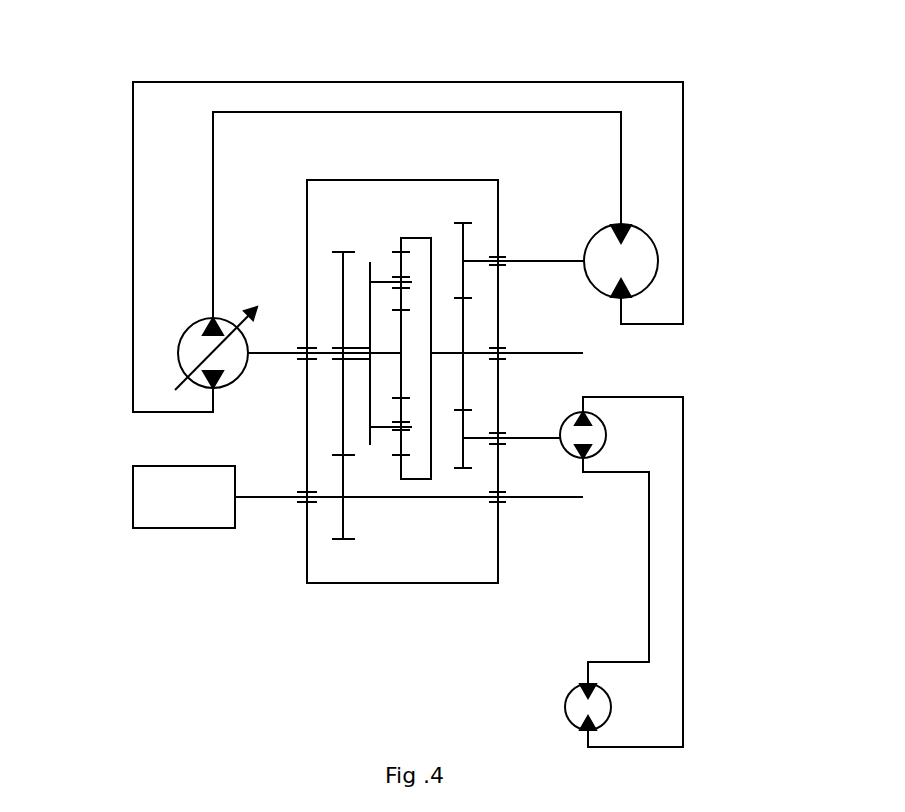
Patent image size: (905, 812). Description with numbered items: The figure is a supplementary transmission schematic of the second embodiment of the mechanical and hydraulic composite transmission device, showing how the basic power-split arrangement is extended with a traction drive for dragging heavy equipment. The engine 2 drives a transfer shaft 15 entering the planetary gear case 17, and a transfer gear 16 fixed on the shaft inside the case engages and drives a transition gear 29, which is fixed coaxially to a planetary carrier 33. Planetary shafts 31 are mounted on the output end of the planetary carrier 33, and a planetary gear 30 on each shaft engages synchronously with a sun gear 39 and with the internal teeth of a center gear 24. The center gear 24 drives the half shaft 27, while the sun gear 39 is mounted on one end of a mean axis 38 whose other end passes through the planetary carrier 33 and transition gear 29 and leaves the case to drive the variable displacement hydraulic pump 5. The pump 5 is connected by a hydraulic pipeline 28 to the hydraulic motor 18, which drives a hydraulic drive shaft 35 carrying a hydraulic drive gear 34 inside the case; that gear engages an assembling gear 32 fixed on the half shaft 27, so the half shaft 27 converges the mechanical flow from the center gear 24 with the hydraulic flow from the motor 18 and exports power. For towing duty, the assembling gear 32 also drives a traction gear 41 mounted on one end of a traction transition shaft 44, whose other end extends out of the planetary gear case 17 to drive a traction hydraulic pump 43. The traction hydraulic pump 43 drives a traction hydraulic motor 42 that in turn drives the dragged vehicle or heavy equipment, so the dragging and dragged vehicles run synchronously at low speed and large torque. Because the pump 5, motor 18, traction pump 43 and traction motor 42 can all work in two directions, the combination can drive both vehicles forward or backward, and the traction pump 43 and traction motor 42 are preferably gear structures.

The engine 2 is at (155, 517).
The variable displacement hydraulic pump 5 is at (192, 340).
The transfer shaft 15 is at (270, 495).
The transfer gear 16 is at (340, 508).
The planetary gear case 17 is at (463, 556).
The hydraulic motor 18 is at (633, 262).
The center gear 24 is at (416, 240).
The half shaft 27 is at (547, 355).
The hydraulic pipeline 28 is at (133, 355).
The transition gear 29 is at (343, 318).
The planetary gear 30 is at (402, 440).
The planetary shaft 31 is at (388, 278).
The assembling gear 32 is at (463, 311).
The planetary carrier 33 is at (370, 302).
The hydraulic drive gear 34 is at (462, 248).
The hydraulic drive shaft 35 is at (532, 261).
The mean axis 38 is at (270, 357).
The sun gear 39 is at (404, 383).
The traction gear 41 is at (462, 423).
The traction hydraulic motor 42 is at (573, 707).
The traction hydraulic pump 43 is at (595, 445).
The traction transition shaft 44 is at (512, 440).